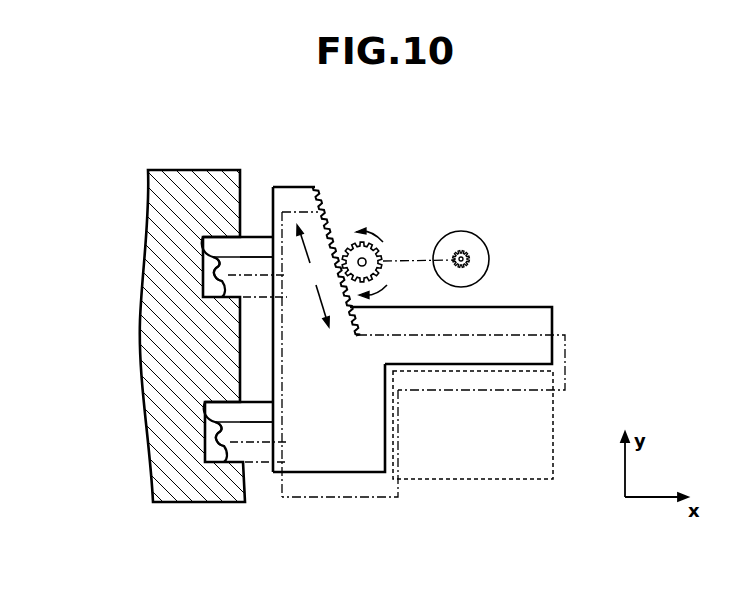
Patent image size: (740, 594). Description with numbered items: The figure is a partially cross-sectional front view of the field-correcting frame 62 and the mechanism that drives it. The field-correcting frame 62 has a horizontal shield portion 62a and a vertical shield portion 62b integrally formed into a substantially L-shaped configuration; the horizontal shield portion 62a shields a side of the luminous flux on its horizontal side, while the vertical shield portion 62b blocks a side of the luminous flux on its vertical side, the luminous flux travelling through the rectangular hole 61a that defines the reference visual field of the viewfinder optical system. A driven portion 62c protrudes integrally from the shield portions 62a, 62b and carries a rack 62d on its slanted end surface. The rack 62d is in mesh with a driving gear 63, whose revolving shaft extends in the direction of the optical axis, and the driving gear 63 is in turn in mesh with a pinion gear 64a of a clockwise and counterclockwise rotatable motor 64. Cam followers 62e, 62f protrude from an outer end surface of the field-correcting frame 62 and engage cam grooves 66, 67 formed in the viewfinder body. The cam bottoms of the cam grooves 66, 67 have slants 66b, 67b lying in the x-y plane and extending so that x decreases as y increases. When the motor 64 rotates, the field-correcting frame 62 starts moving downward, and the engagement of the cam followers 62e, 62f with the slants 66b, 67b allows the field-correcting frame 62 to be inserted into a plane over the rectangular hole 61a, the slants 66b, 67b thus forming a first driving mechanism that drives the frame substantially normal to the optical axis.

The rectangular hole 61a is at (533, 480).
The field-correcting frame 62 is at (371, 342).
The horizontal shield portion 62a is at (540, 316).
The vertical shield portion 62b is at (326, 455).
The driven portion 62c is at (294, 205).
The rack 62d is at (321, 204).
The cam follower 62e is at (248, 288).
The cam follower 62f is at (248, 414).
The driving gear 63 is at (369, 259).
The motor 64 is at (505, 227).
The pinion gear 64a is at (473, 257).
The cam groove 66 is at (160, 264).
The slant 66b is at (221, 274).
The cam groove 67 is at (174, 430).
The slant 67b is at (220, 433).